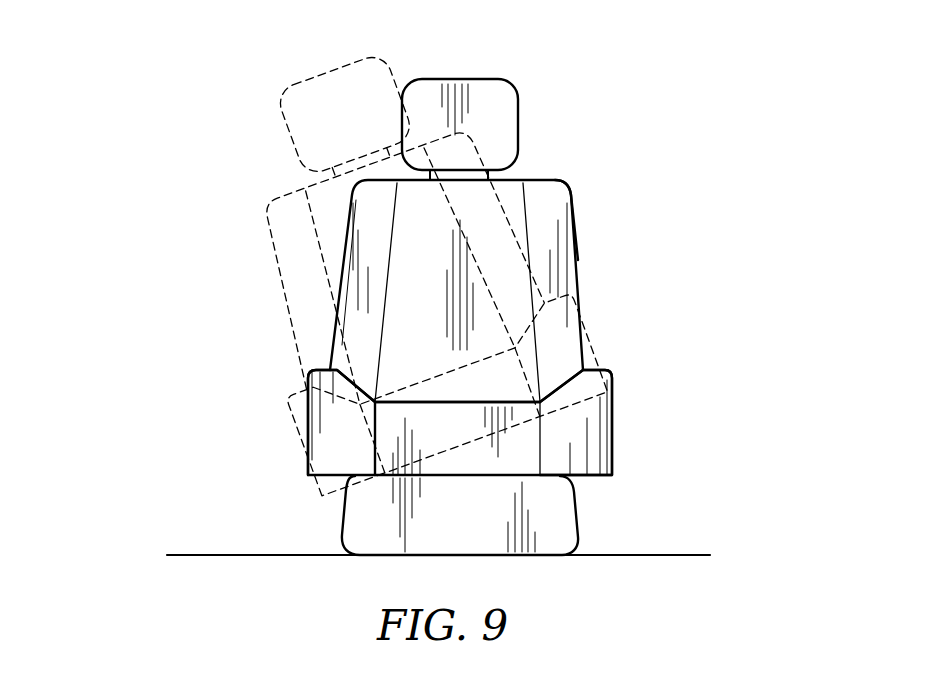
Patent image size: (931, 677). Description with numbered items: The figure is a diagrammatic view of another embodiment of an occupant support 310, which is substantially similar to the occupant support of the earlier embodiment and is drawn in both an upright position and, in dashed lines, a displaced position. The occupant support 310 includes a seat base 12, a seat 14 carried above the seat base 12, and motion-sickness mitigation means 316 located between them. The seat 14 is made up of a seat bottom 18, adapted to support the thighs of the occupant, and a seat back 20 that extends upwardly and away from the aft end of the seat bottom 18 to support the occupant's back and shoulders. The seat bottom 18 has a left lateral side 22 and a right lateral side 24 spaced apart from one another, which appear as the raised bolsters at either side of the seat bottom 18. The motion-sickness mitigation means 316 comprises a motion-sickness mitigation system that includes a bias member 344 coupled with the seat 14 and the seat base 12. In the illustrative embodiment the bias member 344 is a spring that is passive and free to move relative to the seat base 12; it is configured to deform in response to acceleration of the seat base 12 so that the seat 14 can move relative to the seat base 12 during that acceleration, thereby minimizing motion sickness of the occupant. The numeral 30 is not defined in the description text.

The occupant support 310 is at (158, 94).
The seat base 12 is at (219, 545).
The seat 14 is at (598, 280).
The seat back 20 is at (586, 208).
The seat bottom 18 is at (630, 404).
The left lateral side 22 is at (630, 456).
The right lateral side 24 is at (296, 418).
The seating surface 30 is at (393, 402).
The motion-sickness mitigation means 316 is at (588, 535).
The bias member 344 is at (394, 547).